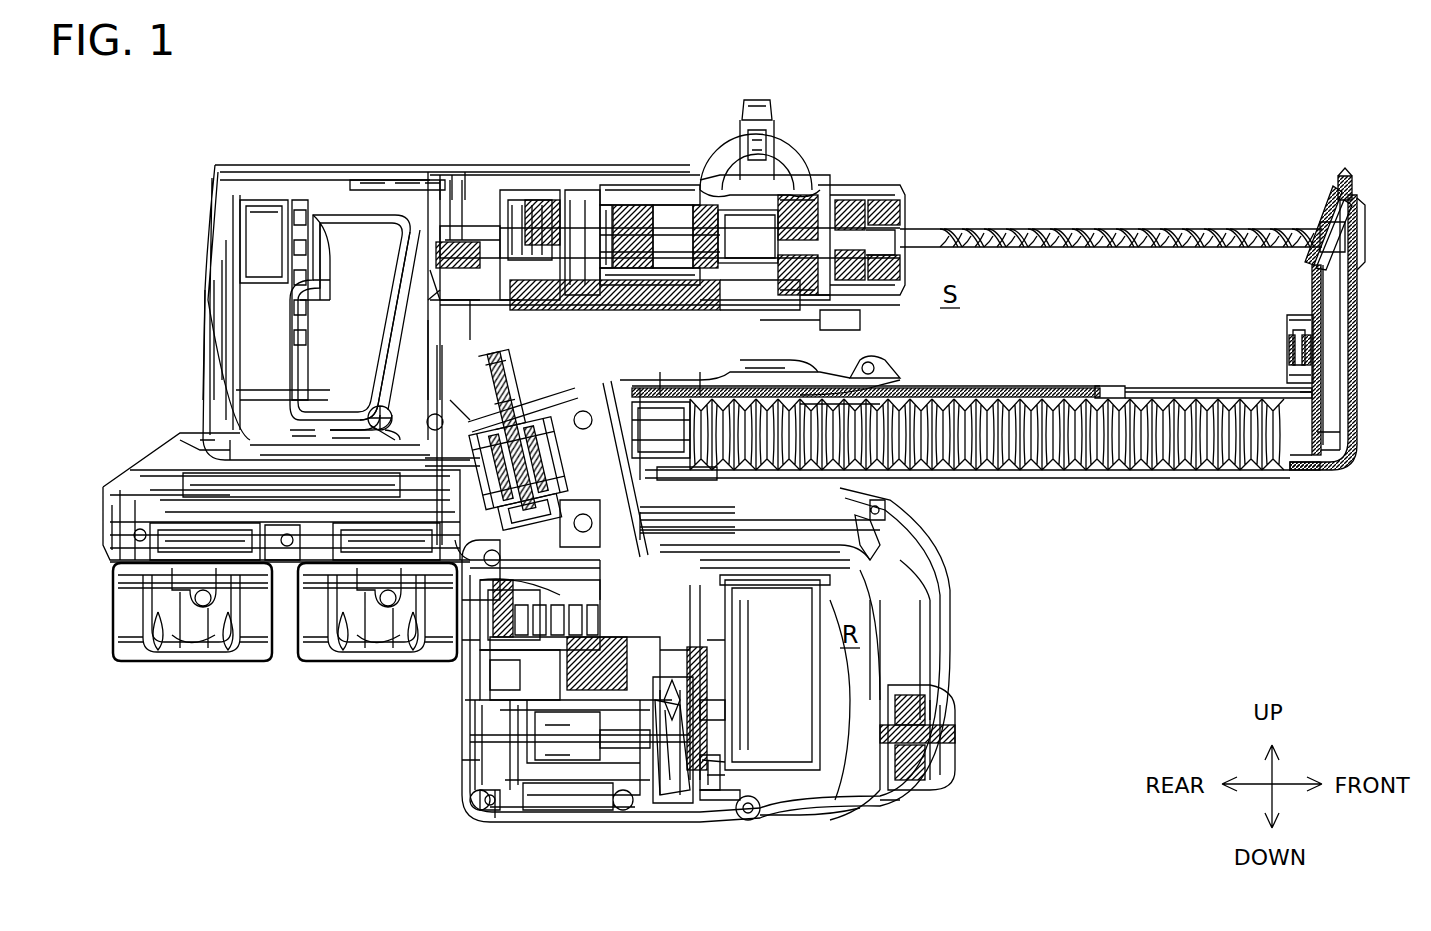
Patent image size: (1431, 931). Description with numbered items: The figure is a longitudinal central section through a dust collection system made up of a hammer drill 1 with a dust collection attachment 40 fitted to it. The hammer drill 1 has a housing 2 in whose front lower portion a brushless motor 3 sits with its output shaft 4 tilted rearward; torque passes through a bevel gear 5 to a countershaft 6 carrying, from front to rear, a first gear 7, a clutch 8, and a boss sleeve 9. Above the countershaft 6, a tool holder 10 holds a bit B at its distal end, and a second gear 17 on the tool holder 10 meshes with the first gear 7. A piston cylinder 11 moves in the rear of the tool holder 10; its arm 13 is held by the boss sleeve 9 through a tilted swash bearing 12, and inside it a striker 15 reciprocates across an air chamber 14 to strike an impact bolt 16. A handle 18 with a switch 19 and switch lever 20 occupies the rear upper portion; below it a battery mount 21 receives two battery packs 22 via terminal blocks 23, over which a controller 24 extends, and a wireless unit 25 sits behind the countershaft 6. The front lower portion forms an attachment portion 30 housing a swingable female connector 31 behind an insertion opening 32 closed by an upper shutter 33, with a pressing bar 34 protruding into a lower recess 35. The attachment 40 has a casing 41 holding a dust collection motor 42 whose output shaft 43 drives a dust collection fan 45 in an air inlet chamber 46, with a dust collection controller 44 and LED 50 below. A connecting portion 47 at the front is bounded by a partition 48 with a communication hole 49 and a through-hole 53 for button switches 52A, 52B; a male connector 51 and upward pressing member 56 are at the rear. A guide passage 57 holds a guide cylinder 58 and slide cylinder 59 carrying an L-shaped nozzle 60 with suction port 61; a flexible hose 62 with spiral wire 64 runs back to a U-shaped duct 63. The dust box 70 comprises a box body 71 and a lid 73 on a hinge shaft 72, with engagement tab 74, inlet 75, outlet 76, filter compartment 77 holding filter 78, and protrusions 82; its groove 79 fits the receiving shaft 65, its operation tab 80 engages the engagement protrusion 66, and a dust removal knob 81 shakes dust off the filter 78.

The hammer drill 1 is at (628, 120).
The housing 2 is at (458, 165).
The motor 3 is at (386, 378).
The output shaft 4 is at (404, 326).
The bevel gear 5 is at (408, 296).
The countershaft 6 is at (735, 325).
The first gear 7 is at (700, 240).
The clutch 8 is at (600, 178).
The boss sleeve 9 is at (545, 190).
The tool holder 10 is at (765, 130).
The piston cylinder 11 is at (608, 200).
The swash bearing 12 is at (558, 200).
The arm 13 is at (588, 215).
The air chamber 14 is at (640, 215).
The striker 15 is at (682, 220).
The impact bolt 16 is at (815, 182).
The second gear 17 is at (727, 200).
The handle 18 is at (218, 254).
The switch 19 is at (256, 220).
The switch lever 20 is at (340, 250).
The battery mount 21 is at (283, 560).
The battery pack 22 is at (188, 645).
The terminal block 23 is at (346, 430).
The controller 24 is at (300, 430).
The wireless unit 25 is at (432, 180).
The attachment portion 30 is at (404, 350).
The female connector 31 is at (492, 686).
The insertion opening 32 is at (490, 705).
The upper shutter 33 is at (490, 652).
The pressing bar 34 is at (478, 726).
The lower recess 35 is at (620, 780).
The dust collection attachment 40 is at (1040, 368).
The casing 41 is at (812, 352).
The dust collection motor 42 is at (592, 780).
The output shaft 43 is at (565, 790).
The dust collection controller 44 is at (540, 790).
The dust collection fan 45 is at (662, 795).
The air inlet chamber 46 is at (684, 805).
The connecting portion 47 is at (902, 802).
The partition 48 is at (705, 718).
The communication hole 49 is at (712, 758).
The LED 50 is at (530, 805).
The male connector 51 is at (890, 547).
The button switch 52A is at (730, 596).
The button switch 52B is at (718, 652).
The through-hole 53 is at (900, 562).
The upward pressing member 56 is at (478, 762).
The guide passage 57 is at (862, 362).
The guide cylinder 58 is at (986, 388).
The slide cylinder 59 is at (1197, 388).
The nozzle 60 is at (1312, 286).
The suction port 61 is at (1322, 200).
The flexible hose 62 is at (1122, 397).
The duct 63 is at (742, 390).
The spiral wire 64 is at (1105, 388).
The receiving shaft 65 is at (744, 822).
The engagement protrusion 66 is at (882, 506).
The dust box 70 is at (916, 644).
The box body 71 is at (897, 625).
The hinge shaft 72 is at (716, 810).
The lid 73 is at (742, 680).
The engagement tab 74 is at (800, 400).
The inlet 75 is at (772, 388).
The outlet 76 is at (725, 752).
The filter compartment 77 is at (836, 760).
The filter 78 is at (888, 664).
The groove 79 is at (784, 822).
The operation tab 80 is at (878, 522).
The dust removal knob 81 is at (950, 732).
The protrusion 82 is at (882, 585).
The bit B is at (1075, 226).